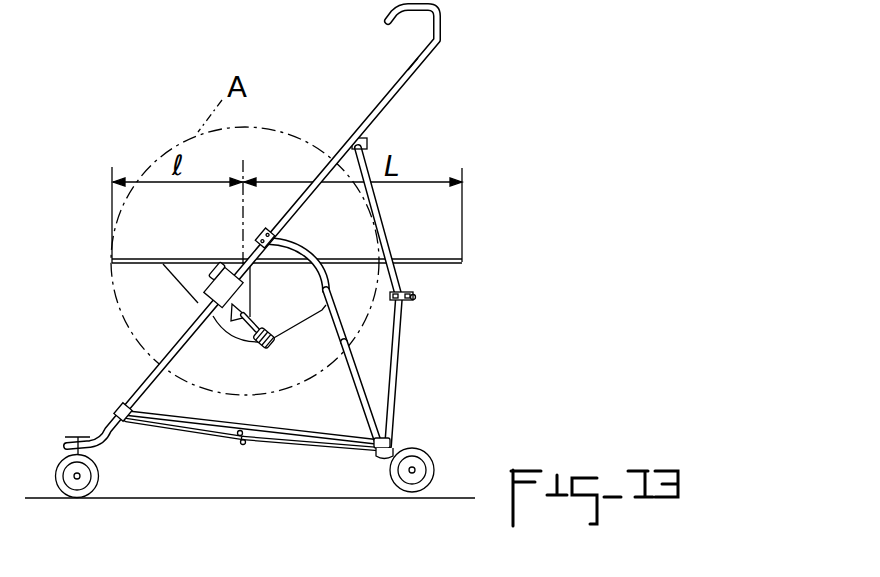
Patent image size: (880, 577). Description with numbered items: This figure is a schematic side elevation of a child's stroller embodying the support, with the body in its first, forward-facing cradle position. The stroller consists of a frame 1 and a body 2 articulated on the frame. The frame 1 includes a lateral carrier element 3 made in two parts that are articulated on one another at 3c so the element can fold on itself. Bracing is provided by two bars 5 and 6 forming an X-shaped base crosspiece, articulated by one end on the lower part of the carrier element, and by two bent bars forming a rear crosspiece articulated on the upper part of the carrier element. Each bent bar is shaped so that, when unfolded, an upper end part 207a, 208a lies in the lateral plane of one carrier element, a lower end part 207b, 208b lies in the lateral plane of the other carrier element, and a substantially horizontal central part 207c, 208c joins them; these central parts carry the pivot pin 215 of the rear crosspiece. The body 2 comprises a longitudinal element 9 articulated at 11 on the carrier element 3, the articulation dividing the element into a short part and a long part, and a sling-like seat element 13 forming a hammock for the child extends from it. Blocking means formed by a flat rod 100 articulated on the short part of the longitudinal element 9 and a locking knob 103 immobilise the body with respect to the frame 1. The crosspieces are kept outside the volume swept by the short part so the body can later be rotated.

The frame 1 is at (102, 405).
The body 2 is at (450, 266).
The lateral carrier element 3 is at (390, 90).
The articulation 3c is at (197, 306).
The bar 5 is at (186, 421).
The bar 6 is at (230, 443).
The longitudinal element 9 is at (135, 259).
The articulation 11 is at (246, 250).
The sling-like seat element 13 is at (294, 337).
The flat rod 100 is at (211, 271).
The locking knob 103 is at (266, 327).
The upper end part 207a is at (393, 236).
The lower end part 207b is at (403, 350).
The central part 207c is at (416, 298).
The upper end part 208a is at (382, 246).
The lower end part 208b is at (392, 350).
The central part 208c is at (389, 296).
The pivot pin 215 is at (414, 302).